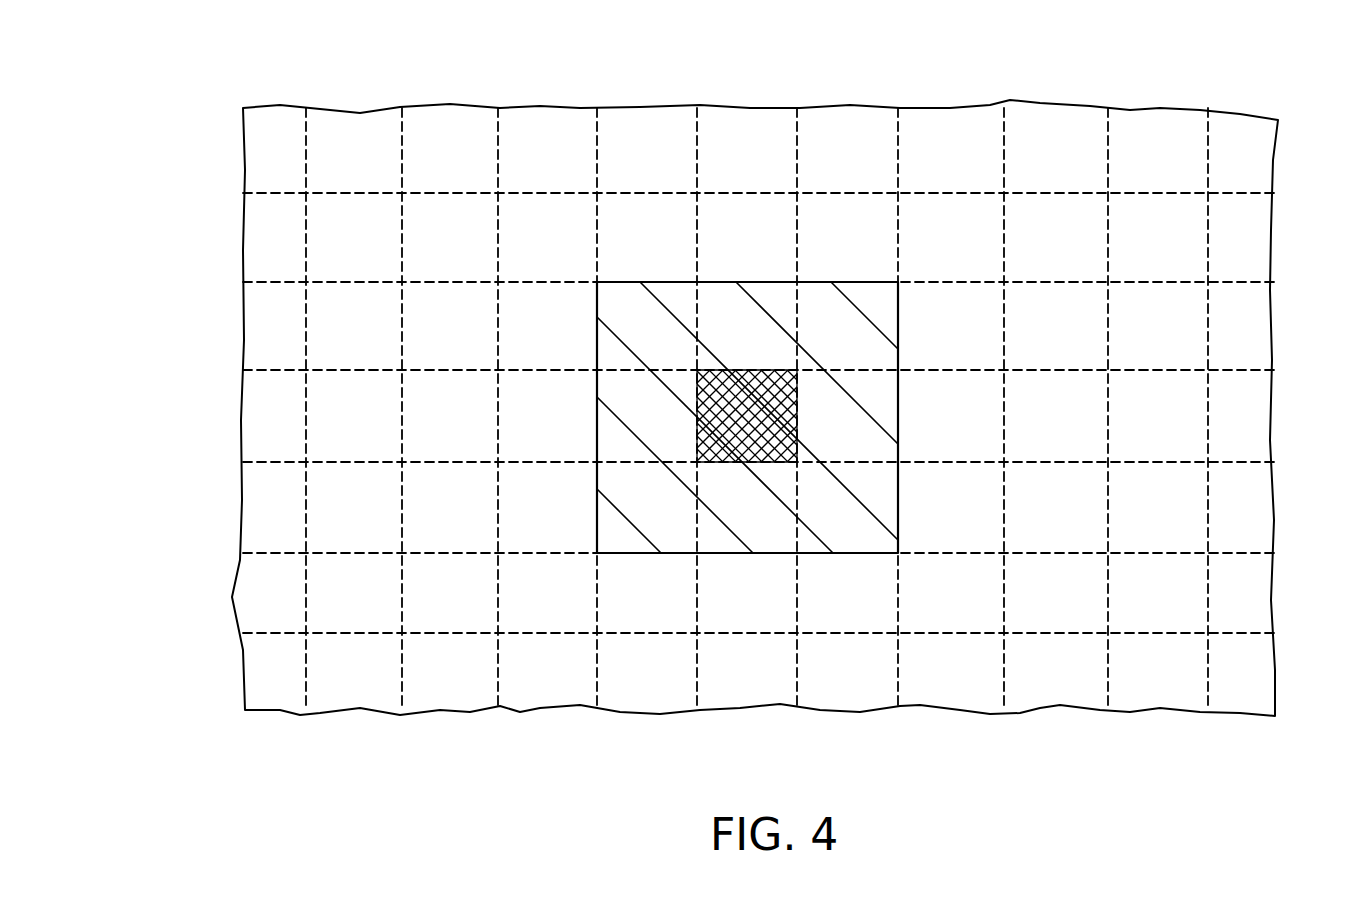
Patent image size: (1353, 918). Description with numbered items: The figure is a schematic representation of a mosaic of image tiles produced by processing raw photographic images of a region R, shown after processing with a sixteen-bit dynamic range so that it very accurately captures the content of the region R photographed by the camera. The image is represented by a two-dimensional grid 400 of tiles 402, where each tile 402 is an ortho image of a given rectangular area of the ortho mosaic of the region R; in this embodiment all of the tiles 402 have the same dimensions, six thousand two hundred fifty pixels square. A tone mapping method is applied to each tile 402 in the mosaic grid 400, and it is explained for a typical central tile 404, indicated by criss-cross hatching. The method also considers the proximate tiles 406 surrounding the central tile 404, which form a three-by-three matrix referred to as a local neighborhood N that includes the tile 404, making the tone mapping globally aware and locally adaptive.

The grid 400 is at (222, 558).
The tiles 402 is at (657, 135).
The central tile 404 is at (737, 370).
The proximate tiles 406 is at (618, 283).
The local neighborhood N is at (896, 478).
The region R is at (1180, 90).